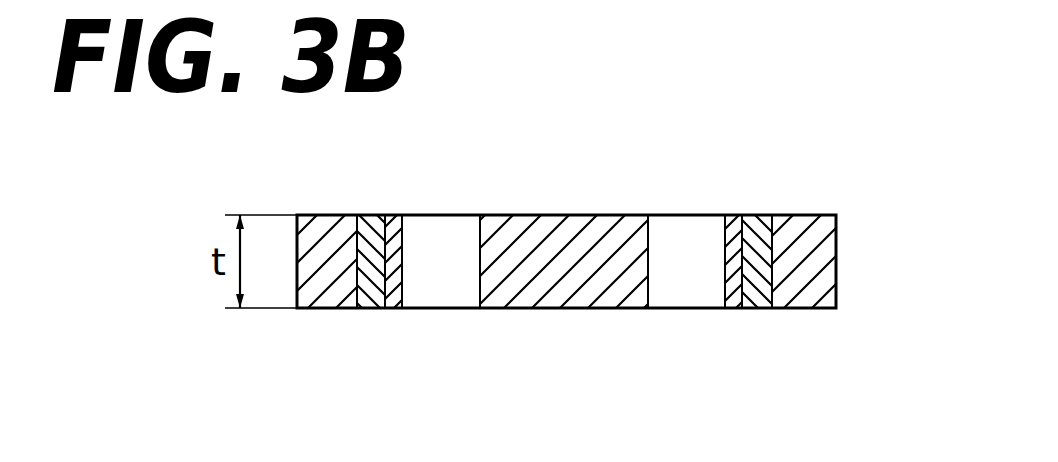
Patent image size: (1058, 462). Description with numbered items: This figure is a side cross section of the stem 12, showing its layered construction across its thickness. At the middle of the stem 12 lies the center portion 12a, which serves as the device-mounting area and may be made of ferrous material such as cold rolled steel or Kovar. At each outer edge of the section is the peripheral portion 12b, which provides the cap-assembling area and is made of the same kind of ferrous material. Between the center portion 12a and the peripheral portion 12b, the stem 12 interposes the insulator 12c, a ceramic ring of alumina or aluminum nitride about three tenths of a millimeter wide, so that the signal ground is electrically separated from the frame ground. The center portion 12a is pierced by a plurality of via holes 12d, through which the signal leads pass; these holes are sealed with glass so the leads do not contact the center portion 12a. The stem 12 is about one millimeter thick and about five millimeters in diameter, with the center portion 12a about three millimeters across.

The stem 12 is at (600, 165).
The center portion 12a is at (745, 315).
The peripheral portion 12b is at (327, 212).
The insulator 12c is at (368, 310).
The via holes 12d is at (440, 212).